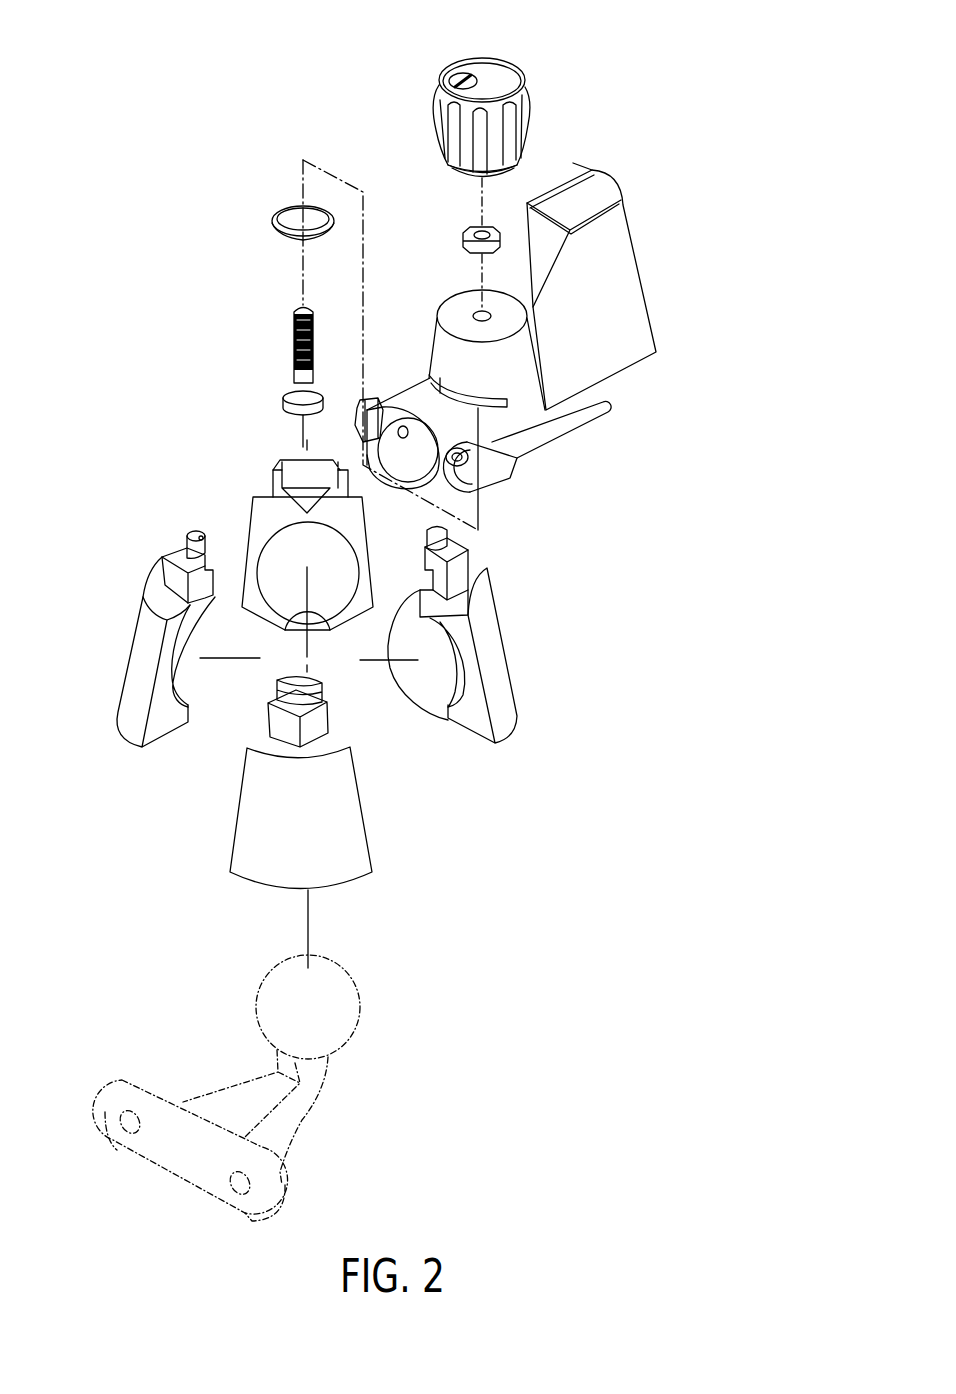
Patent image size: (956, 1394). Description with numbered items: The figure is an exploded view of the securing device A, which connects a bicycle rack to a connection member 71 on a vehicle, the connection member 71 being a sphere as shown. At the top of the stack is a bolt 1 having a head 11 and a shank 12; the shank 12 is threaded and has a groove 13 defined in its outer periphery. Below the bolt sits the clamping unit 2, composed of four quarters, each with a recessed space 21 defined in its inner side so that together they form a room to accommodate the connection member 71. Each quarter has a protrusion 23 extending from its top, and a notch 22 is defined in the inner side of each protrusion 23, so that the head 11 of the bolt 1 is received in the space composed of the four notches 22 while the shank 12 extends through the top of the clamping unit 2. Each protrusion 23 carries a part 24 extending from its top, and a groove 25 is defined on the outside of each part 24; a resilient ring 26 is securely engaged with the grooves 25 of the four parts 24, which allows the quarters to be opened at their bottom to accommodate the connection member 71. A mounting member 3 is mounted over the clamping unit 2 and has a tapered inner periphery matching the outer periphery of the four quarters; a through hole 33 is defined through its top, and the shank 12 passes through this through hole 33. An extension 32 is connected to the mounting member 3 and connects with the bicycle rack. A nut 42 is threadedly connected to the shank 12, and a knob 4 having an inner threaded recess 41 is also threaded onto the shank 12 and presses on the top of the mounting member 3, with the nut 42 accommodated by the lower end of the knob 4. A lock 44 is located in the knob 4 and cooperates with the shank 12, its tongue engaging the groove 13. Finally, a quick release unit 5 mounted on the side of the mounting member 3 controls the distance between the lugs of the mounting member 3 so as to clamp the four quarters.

The bolt 1 is at (222, 300).
The head 11 is at (288, 407).
The shank 12 is at (295, 320).
The groove 13 is at (297, 347).
The clamping unit 2 is at (160, 512).
The recessed space 21 is at (172, 673).
The notch 22 is at (320, 693).
The protrusion 23 is at (313, 722).
The part 24 is at (327, 698).
The groove 25 is at (187, 542).
The resilient ring 26 is at (277, 212).
The mounting member 3 is at (447, 300).
The extension 32 is at (590, 288).
The through hole 33 is at (490, 322).
The knob 4 is at (432, 130).
The inner threaded recess 41 is at (510, 137).
The nut 42 is at (465, 232).
The lock 44 is at (458, 78).
The quick release unit 5 is at (515, 478).
The connection member 71 is at (327, 1017).
The securing device A is at (622, 693).